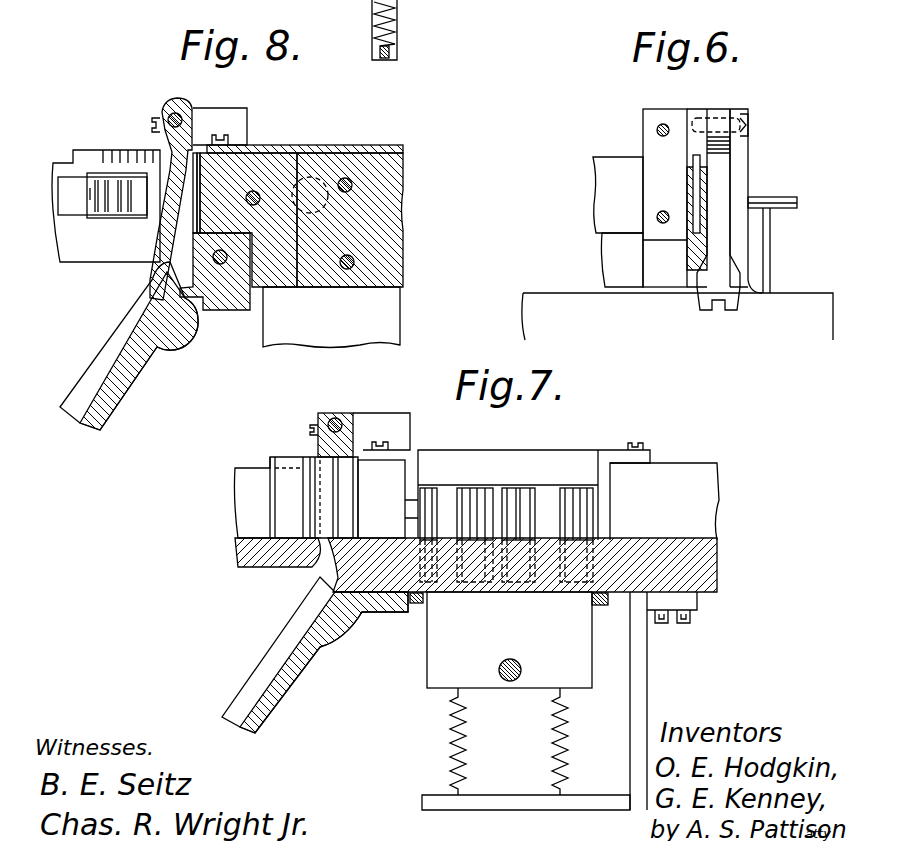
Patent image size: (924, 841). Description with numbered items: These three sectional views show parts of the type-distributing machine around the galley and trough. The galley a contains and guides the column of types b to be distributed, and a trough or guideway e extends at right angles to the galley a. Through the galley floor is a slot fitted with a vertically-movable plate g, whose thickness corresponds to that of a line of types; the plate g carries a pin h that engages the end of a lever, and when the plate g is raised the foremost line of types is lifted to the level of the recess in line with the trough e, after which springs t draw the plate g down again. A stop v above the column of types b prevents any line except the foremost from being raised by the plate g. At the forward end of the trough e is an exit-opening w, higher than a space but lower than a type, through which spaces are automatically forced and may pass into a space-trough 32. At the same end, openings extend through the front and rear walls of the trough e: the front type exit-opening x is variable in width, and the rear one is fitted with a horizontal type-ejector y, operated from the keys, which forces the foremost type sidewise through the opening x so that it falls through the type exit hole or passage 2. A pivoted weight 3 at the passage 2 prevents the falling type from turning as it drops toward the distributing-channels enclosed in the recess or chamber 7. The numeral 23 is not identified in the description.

In FIG. 8, the type exit hole or passage 2 is at (190, 262).
In FIG. 8, the pivoted weight 3 is at (173, 173).
In FIG. 6, the pivoted weight 3 is at (717, 257).
In FIG. 8, the recess or chamber 7 is at (128, 327).
In FIG. 7, the recess or chamber 7 is at (287, 637).
In FIG. 8, the body block 23 is at (298, 197).
In FIG. 6, the body block 23 is at (785, 199).
In FIG. 8, the space-trough 32 is at (106, 206).
In FIG. 6, the space-trough 32 is at (690, 250).
In FIG. 7, the space-trough 32 is at (253, 500).
In FIG. 8, the type exit-opening x is at (202, 187).
In FIG. 8, the type-ejector y is at (280, 168).
In FIG. 6, the type-ejector y is at (618, 195).
In FIG. 7, the type-ejector y is at (353, 488).
In FIG. 8, the vertically-movable plate g is at (331, 317).
In FIG. 7, the vertically-movable plate g is at (509, 640).
In FIG. 6, the exit-opening w is at (690, 176).
In FIG. 7, the exit-opening w is at (320, 451).
In FIG. 6, the galley a is at (622, 260).
In FIG. 7, the galley a is at (605, 531).
In FIG. 7, the stop v is at (534, 491).
In FIG. 7, the column of types b is at (518, 505).
In FIG. 7, the trough or guideway e is at (686, 529).
In FIG. 7, the pin h is at (520, 667).
In FIG. 7, the springs t is at (447, 740).